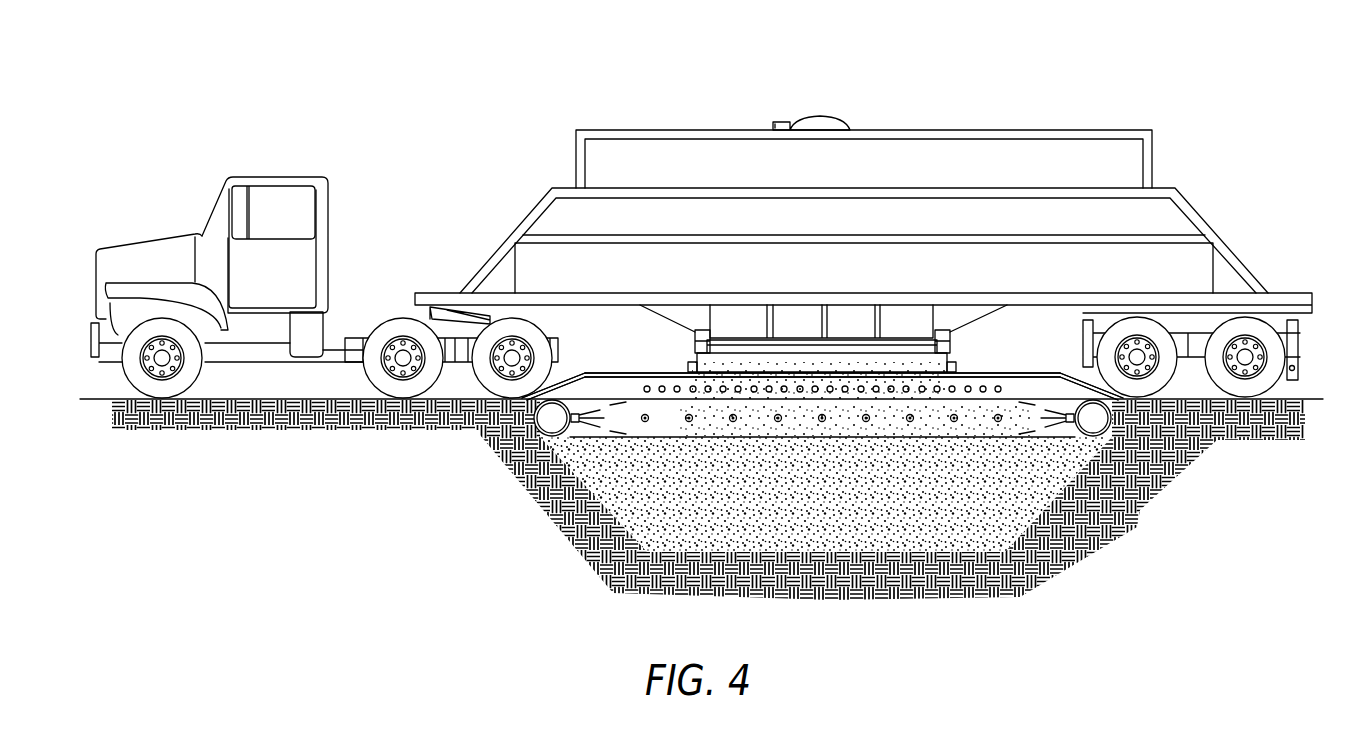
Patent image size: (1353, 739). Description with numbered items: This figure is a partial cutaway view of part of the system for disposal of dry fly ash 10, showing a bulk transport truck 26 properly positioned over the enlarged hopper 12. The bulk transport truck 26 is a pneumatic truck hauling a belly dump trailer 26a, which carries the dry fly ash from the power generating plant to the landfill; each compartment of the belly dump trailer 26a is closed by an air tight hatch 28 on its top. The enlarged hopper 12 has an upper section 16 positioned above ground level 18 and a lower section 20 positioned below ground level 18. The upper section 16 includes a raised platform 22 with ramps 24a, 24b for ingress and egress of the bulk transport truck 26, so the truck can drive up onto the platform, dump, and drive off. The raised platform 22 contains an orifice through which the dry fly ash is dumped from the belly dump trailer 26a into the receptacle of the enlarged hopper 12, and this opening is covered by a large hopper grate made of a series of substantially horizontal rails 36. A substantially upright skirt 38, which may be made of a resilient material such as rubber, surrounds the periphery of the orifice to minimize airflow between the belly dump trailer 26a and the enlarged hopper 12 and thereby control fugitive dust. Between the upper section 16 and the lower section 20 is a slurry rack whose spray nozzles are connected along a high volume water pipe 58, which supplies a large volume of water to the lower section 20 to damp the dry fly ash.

The system for disposal of dry fly ash 10 is at (701, 420).
The enlarged hopper 12 is at (758, 204).
The upper section 16 is at (1036, 352).
The ground level 18 is at (1323, 398).
The lower section 20 is at (937, 527).
The raised platform 22 is at (846, 313).
The ingress ramp 24a is at (578, 372).
The egress ramp 24b is at (1068, 378).
The bulk transport truck 26 is at (274, 178).
The belly dump trailer 26a is at (864, 151).
The air tight hatch 28 is at (822, 116).
The horizontal rails 36 is at (968, 386).
The upright skirt 38 is at (687, 370).
The high volume water pipe 58 is at (543, 422).